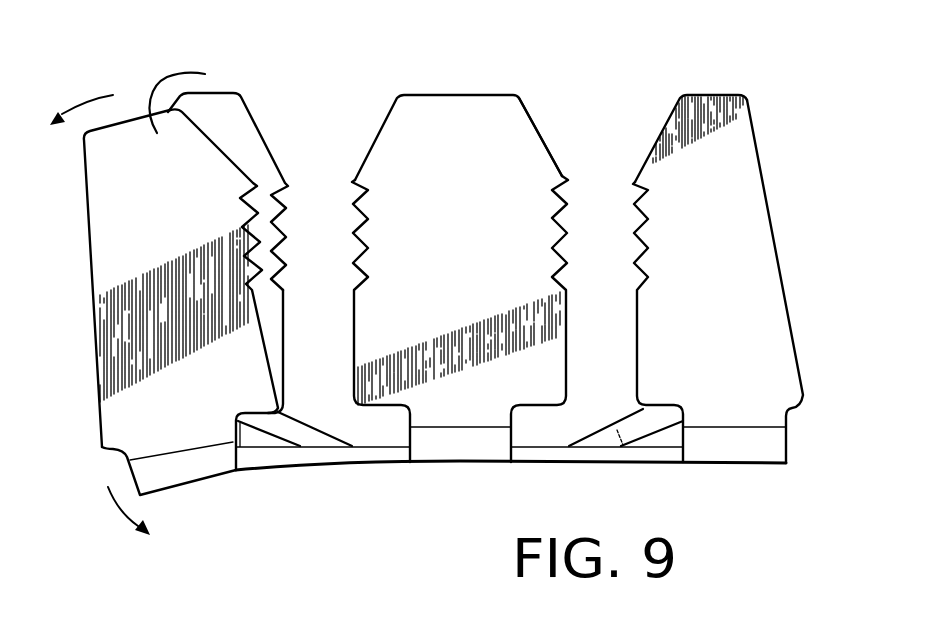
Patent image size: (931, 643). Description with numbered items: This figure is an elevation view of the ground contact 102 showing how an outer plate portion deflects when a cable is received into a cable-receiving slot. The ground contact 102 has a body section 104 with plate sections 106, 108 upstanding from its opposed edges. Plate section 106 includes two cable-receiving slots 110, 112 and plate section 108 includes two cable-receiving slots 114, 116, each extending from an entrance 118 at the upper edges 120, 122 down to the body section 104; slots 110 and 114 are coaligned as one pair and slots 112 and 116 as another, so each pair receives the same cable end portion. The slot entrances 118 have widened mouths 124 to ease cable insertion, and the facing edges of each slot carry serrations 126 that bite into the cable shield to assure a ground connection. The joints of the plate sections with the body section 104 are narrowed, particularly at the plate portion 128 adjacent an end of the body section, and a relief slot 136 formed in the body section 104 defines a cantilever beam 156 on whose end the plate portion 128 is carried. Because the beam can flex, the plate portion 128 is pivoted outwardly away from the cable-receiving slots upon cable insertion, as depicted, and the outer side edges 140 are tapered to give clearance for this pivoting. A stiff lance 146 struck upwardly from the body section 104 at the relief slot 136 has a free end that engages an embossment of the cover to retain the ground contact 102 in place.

The ground contact 102 is at (805, 108).
The body section 104 is at (578, 467).
The plate section 106 is at (460, 117).
The plate section 108 is at (461, 251).
The cable-receiving slot 110 is at (283, 238).
The cable-receiving slot 112 is at (637, 205).
The cable-receiving slot 114 is at (272, 331).
The cable-receiving slot 116 is at (658, 322).
The entrance 118 is at (565, 182).
The upper edge 120 is at (702, 93).
The upper edge 122 is at (682, 252).
The widened mouth 124 is at (533, 117).
The serrations 126 is at (355, 207).
The plate portion 128 is at (203, 108).
The relief slot 136 is at (253, 449).
The outer side edge 140 is at (775, 242).
The stiff lance 146 is at (298, 416).
The cantilever beam 156 is at (655, 466).